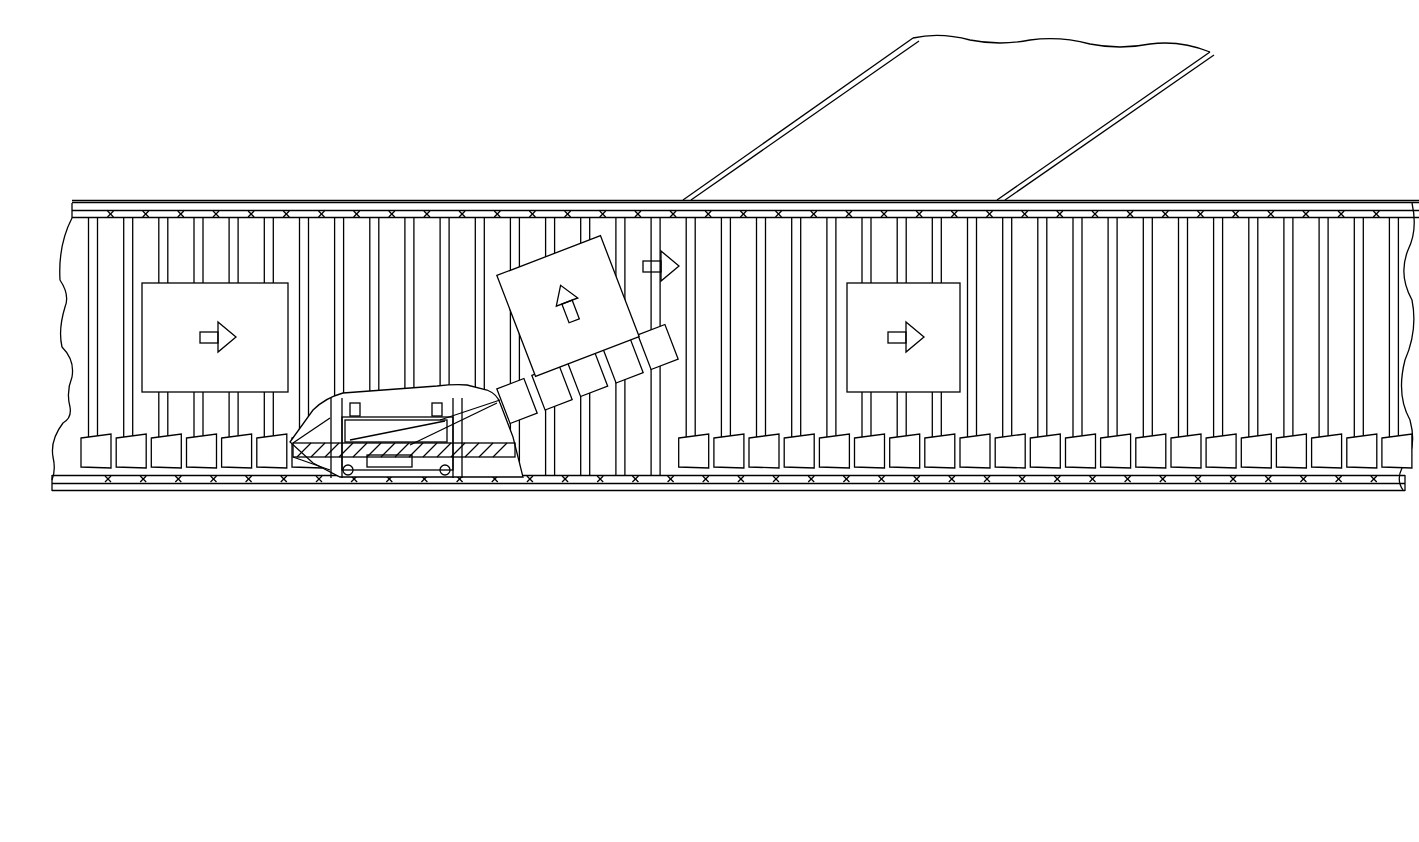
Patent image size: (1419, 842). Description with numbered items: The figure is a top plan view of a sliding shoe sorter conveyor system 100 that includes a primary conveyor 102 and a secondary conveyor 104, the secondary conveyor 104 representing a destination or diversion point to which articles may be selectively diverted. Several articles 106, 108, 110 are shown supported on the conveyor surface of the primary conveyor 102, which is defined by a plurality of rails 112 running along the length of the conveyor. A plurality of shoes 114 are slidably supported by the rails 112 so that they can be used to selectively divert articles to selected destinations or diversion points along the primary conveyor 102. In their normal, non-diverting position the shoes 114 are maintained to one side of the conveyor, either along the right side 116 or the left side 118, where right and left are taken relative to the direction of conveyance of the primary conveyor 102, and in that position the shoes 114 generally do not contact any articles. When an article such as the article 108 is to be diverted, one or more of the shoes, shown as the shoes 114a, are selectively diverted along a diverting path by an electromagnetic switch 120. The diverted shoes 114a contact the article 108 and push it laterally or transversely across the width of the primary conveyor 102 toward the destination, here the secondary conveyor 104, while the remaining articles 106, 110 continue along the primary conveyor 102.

The sliding shoe sorter conveyor system 100 is at (365, 100).
The primary conveyor 102 is at (188, 200).
The secondary conveyor 104 is at (822, 103).
The article 106 is at (904, 391).
The article 108 is at (571, 353).
The article 110 is at (196, 373).
The rails 112 is at (465, 236).
The shoes 114 is at (697, 453).
The shoes 114a is at (672, 510).
The right side 116 is at (228, 484).
The left side 118 is at (351, 200).
The electromagnetic switch 120 is at (355, 503).